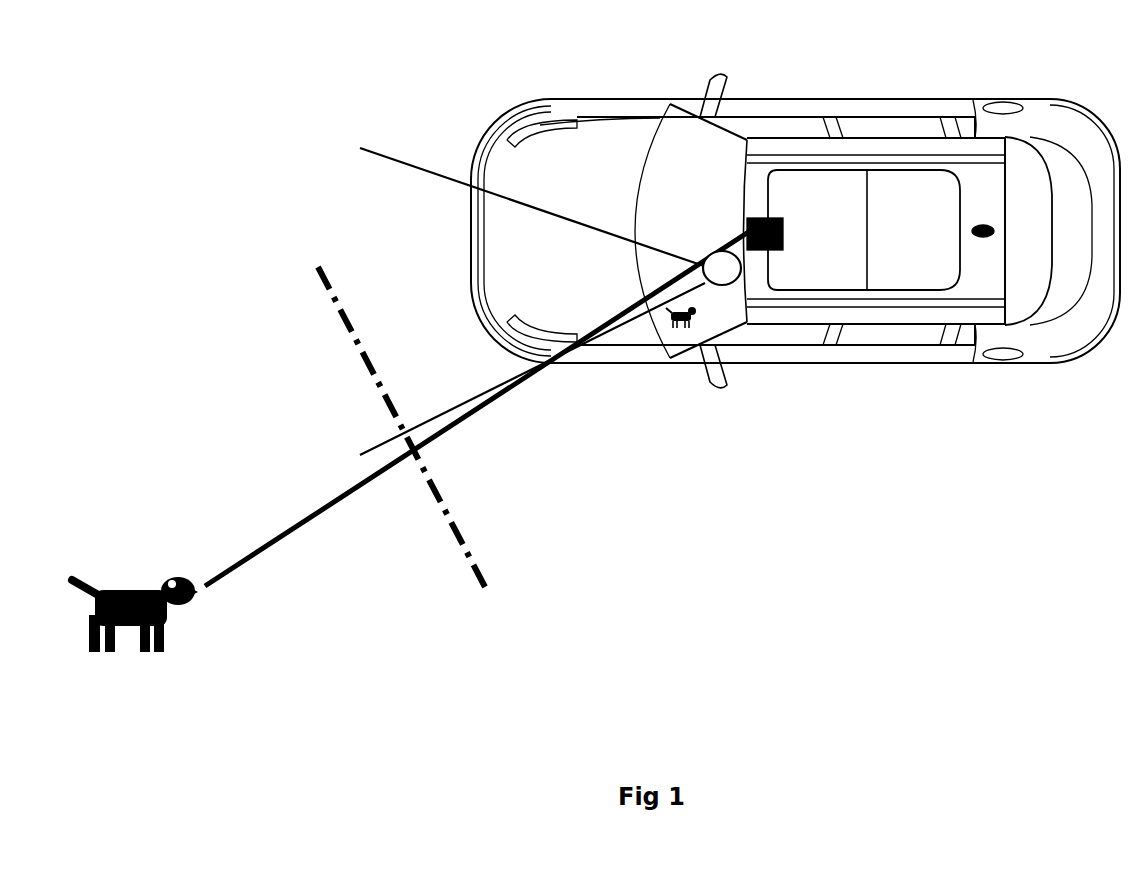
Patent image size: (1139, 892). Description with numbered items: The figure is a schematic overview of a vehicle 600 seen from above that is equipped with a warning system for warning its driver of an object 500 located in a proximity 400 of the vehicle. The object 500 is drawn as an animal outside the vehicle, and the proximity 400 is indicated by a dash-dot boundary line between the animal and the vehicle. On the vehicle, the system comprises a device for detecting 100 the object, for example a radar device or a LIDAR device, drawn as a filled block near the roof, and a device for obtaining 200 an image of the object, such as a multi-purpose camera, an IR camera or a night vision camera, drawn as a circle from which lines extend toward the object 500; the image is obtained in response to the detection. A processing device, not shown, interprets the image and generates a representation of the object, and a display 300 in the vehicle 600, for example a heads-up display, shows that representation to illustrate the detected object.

The device for detecting 100 is at (763, 217).
The device for obtaining an image 200 is at (733, 285).
The display 300 is at (680, 323).
The proximity 400 is at (437, 487).
The object 500 is at (147, 590).
The vehicle 600 is at (440, 258).